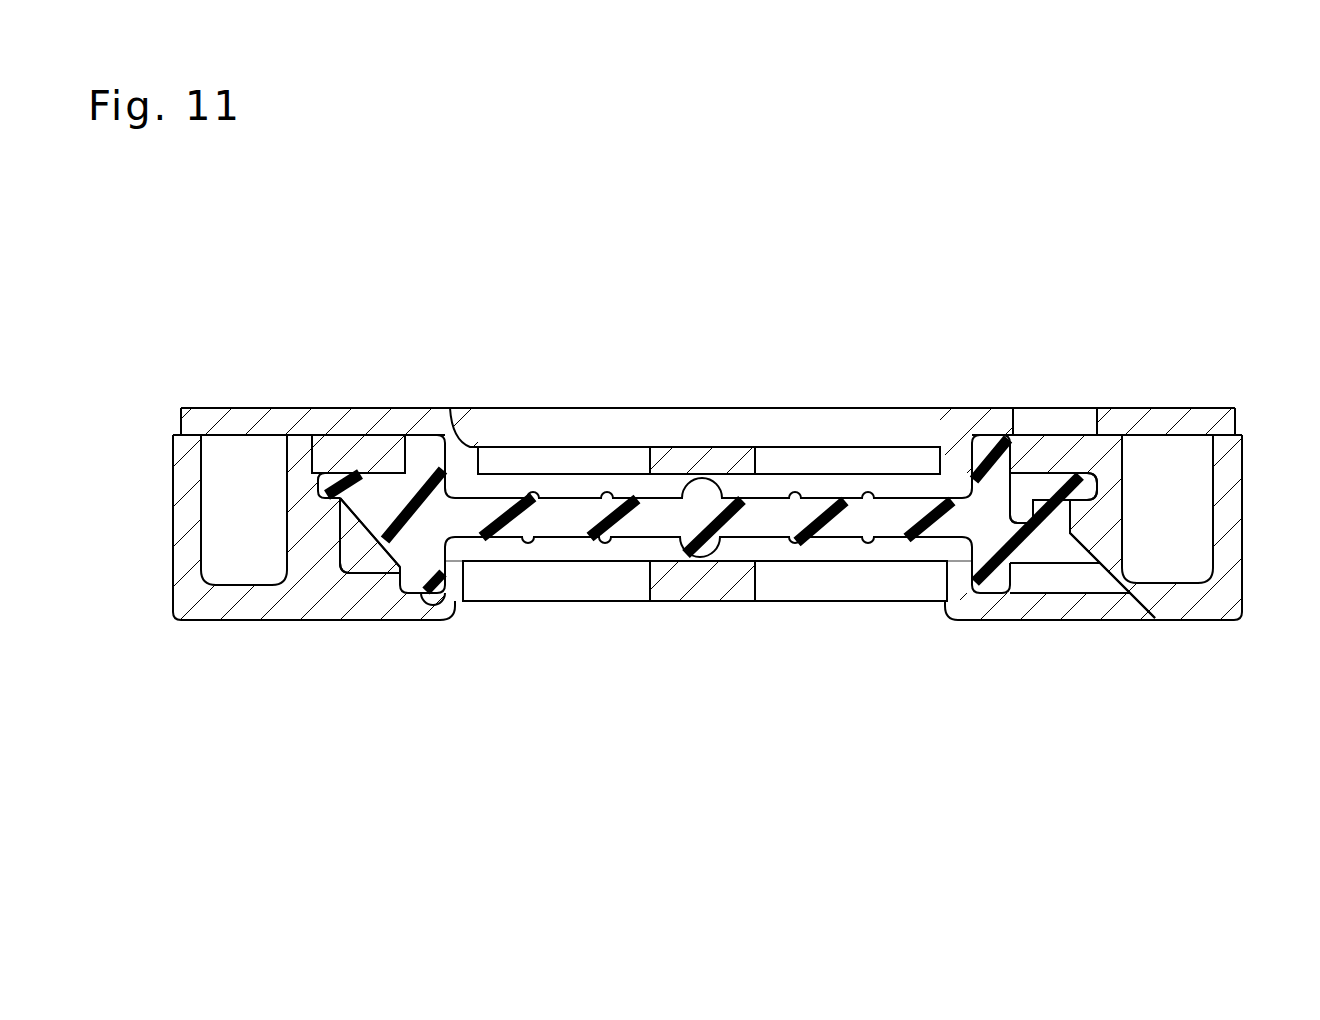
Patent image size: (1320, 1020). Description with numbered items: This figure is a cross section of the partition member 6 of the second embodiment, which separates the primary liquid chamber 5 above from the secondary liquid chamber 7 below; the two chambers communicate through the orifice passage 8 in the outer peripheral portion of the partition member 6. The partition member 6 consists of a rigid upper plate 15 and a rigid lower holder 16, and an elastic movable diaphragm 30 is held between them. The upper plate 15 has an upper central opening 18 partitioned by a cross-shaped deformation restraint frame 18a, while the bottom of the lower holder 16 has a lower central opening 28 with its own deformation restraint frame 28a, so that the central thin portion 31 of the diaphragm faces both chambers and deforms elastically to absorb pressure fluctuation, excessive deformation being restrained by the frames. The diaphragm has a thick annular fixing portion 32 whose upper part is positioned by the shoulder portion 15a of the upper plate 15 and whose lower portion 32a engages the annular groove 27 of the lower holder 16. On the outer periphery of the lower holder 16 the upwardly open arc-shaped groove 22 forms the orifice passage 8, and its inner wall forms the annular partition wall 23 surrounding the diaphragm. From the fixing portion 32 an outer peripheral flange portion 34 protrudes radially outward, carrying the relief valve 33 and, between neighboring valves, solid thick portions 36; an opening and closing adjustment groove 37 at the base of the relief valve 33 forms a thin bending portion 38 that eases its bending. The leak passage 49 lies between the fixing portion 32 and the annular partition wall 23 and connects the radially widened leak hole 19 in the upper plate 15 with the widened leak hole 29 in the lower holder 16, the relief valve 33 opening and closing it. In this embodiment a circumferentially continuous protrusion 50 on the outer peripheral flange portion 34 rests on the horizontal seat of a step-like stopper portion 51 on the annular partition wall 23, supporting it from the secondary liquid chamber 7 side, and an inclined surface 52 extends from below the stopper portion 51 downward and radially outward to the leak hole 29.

The primary liquid chamber 5 is at (795, 309).
The partition member 6 is at (174, 348).
The secondary liquid chamber 7 is at (795, 745).
The orifice passage 8 is at (215, 495).
The upper plate 15 is at (262, 407).
The shoulder portion 15a is at (456, 432).
The lower holder 16 is at (222, 620).
The upper central opening 18 is at (572, 462).
The deformation restraint frame 18a is at (702, 462).
The leak hole 19 is at (1050, 420).
The arc-shaped groove 22 is at (215, 545).
The annular partition wall 23 is at (1120, 520).
The annular groove 27 is at (455, 600).
The lower central opening 28 is at (578, 582).
The deformation restraint frame 28a is at (700, 590).
The leak hole 29 is at (1080, 605).
The elastic movable diaphragm 30 is at (815, 487).
The central thin portion 31 is at (641, 497).
The fixing portion 32 is at (412, 440).
The lower portion 32a is at (428, 592).
The relief valve 33 is at (1072, 500).
The outer peripheral flange portion 34 is at (362, 447).
The solid thick portion 36 is at (372, 582).
The opening and closing adjustment groove 37 is at (1018, 505).
The thin bending portion 38 is at (1045, 588).
The leak passage 49 is at (1085, 548).
The protrusion 50 is at (1100, 468).
The stopper portion 51 is at (325, 485).
The inclined surface 52 is at (320, 490).